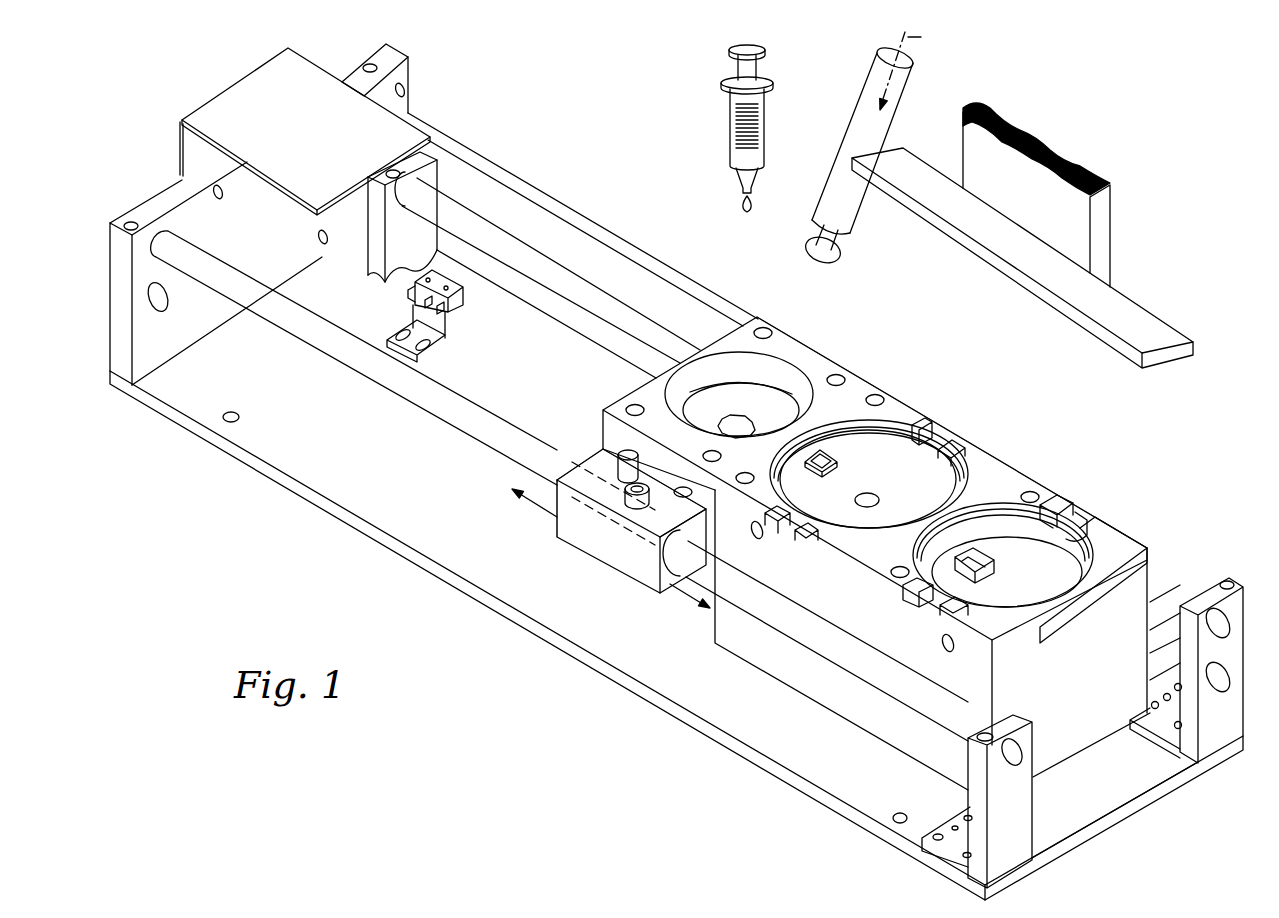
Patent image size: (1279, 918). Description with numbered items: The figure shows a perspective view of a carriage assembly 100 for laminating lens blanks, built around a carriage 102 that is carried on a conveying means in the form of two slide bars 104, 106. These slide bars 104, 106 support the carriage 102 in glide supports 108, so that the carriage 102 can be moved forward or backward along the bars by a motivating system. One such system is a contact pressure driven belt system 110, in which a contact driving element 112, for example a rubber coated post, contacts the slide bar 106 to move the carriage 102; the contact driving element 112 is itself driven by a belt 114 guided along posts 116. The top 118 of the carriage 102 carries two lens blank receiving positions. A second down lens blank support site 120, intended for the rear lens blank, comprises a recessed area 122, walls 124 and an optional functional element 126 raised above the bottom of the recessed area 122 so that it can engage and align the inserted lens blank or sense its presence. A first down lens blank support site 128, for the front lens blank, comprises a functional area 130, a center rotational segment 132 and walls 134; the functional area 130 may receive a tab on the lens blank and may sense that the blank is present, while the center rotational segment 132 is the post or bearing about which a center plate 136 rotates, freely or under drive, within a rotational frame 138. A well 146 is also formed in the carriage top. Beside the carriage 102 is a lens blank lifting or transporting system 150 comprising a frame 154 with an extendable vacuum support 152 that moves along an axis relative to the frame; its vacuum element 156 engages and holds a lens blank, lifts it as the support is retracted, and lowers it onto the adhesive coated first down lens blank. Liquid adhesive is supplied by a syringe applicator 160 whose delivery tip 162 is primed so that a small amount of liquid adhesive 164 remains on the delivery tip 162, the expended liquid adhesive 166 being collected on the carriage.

The carriage assembly 100 is at (502, 672).
The carriage 102 is at (1016, 463).
The slide bar 104 is at (552, 272).
The slide bar 106 is at (417, 396).
The glide supports 108 is at (673, 577).
The contact pressure driven belt system 110 is at (594, 458).
The contact driving element 112 is at (623, 497).
The belt 114 is at (663, 500).
The posts 116 is at (682, 490).
The top of the carriage 118 is at (1118, 538).
The second down lens blank support site 120 is at (1063, 578).
The recessed area 122 is at (1015, 546).
The walls 124 is at (1083, 522).
The functional element 126 is at (987, 583).
The first down lens blank support site 128 is at (965, 455).
The functional area 130 is at (826, 444).
The center rotational segment 132 is at (913, 458).
The walls 134 is at (866, 428).
The center plate 136 is at (936, 481).
The rotational frame 138 is at (964, 442).
The well 146 is at (762, 370).
The lens blank lifting or transporting system 150 is at (1149, 262).
The extendable vacuum support 152 is at (855, 63).
The frame 154 is at (1110, 200).
The vacuum element 156 is at (841, 250).
The syringe applicator 160 is at (701, 111).
The delivery tip 162 is at (754, 176).
The liquid adhesive 164 is at (752, 199).
The expended liquid adhesive 166 is at (764, 404).